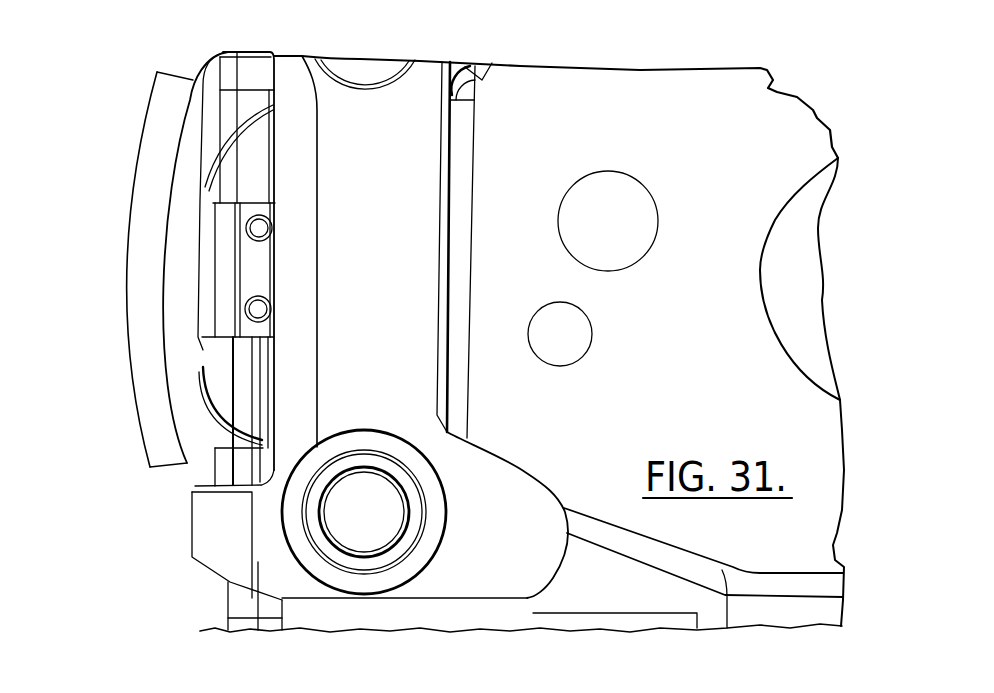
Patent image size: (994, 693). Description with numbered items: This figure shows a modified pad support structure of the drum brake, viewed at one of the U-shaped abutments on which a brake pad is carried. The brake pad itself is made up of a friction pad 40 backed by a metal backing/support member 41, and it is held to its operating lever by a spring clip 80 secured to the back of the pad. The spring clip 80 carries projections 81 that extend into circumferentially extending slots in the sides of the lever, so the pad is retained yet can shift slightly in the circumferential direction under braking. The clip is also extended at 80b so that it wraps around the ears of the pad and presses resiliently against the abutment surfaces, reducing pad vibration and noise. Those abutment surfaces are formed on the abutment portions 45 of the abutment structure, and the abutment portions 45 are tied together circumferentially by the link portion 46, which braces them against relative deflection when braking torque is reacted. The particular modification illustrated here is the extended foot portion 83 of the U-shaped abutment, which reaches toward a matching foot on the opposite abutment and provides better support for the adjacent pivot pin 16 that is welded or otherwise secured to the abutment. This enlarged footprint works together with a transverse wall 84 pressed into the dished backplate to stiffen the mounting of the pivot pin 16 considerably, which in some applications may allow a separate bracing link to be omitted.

The pivot pin 16 is at (375, 518).
The friction pad 40 is at (148, 218).
The metal backing/support member 41 is at (190, 386).
The abutment portion 45 is at (235, 532).
The link portion 46 is at (290, 295).
The spring clip 80 is at (222, 318).
The extended clip portion 80b is at (212, 57).
The projection 81 is at (263, 305).
The extended foot portion 83 is at (524, 525).
The transverse wall 84 is at (710, 577).